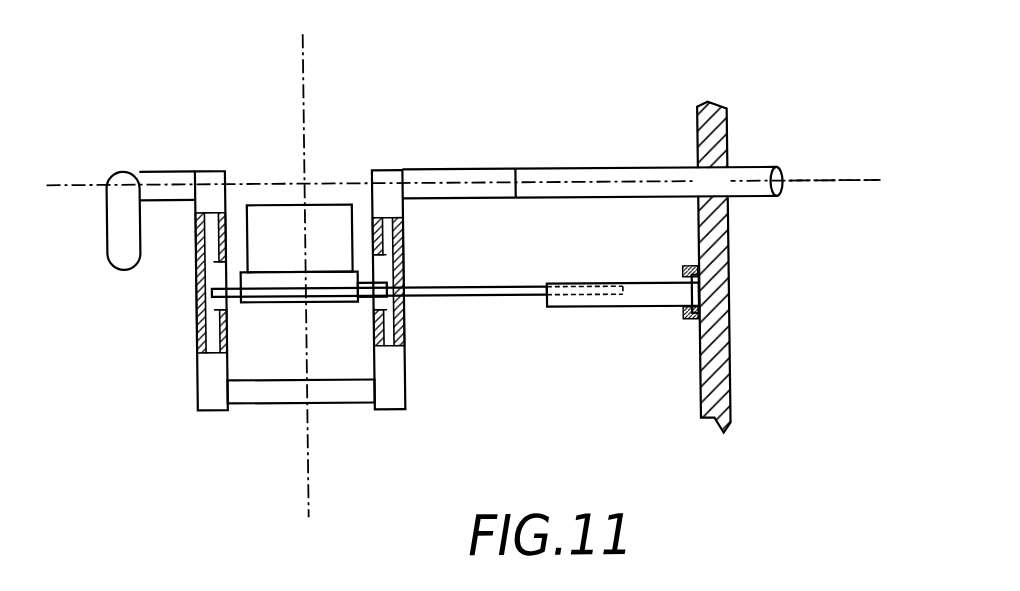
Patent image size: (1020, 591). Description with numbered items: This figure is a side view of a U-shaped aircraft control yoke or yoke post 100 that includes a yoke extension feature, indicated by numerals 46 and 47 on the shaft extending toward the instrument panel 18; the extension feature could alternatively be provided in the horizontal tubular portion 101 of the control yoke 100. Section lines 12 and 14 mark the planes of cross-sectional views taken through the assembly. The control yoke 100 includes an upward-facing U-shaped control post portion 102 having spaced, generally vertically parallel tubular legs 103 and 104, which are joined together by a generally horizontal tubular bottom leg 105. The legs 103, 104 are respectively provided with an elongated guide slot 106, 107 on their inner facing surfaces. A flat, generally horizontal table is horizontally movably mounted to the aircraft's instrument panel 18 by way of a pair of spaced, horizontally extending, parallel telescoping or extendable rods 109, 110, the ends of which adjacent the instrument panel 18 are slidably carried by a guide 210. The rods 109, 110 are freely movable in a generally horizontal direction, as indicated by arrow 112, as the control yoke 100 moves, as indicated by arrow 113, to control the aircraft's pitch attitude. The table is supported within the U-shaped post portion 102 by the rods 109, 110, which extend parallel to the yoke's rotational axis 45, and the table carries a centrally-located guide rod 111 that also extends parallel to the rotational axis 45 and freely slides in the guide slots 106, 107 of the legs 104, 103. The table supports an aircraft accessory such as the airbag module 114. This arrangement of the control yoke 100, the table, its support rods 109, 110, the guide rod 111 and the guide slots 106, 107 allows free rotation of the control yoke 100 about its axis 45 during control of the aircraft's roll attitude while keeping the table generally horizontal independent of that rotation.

The section line 12 is at (373, 31).
The section line 14 is at (396, 280).
The instrument panel 18 is at (729, 337).
The rotational axis 45 is at (844, 180).
The yoke extension feature 46 is at (457, 169).
The yoke extension feature 47 is at (542, 169).
The control yoke 100 is at (150, 86).
The horizontal tubular portion 101 is at (209, 170).
The U-shaped control post portion 102 is at (252, 424).
The tubular leg 103 is at (404, 242).
The tubular leg 104 is at (196, 248).
The tubular bottom leg 105 is at (328, 401).
The guide slot 106 is at (196, 308).
The guide slot 107 is at (377, 314).
The telescoping rod 109 is at (456, 385).
The telescoping rod 110 is at (519, 295).
The guide rod 111 is at (227, 295).
The arrow 112 is at (524, 263).
The arrow 113 is at (568, 182).
The airbag module 114 is at (334, 217).
The guide 210 is at (690, 323).